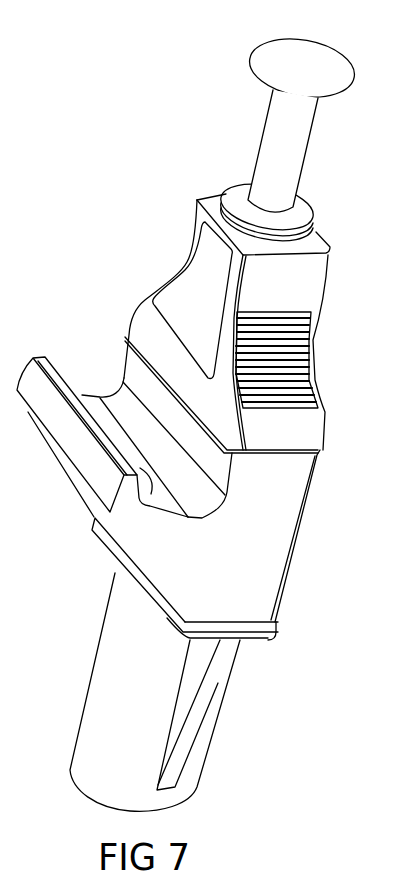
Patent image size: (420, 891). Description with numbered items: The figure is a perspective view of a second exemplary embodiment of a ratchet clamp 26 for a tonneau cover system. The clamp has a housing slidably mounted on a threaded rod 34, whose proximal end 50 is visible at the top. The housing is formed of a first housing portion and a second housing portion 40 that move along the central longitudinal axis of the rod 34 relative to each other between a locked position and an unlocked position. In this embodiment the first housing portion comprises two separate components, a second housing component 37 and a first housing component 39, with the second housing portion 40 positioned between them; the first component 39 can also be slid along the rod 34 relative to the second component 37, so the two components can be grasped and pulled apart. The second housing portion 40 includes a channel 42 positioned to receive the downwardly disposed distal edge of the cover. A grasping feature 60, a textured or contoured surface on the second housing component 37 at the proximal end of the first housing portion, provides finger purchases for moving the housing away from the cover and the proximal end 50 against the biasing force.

The ratchet clamp 26 is at (147, 157).
The rod 34 is at (300, 150).
The second housing component 37 is at (143, 323).
The first housing component 39 is at (100, 700).
The second housing portion 40 is at (277, 538).
The channel 42 is at (143, 478).
The proximal end of the threaded rod 50 is at (318, 55).
The grasping feature 60 is at (277, 363).